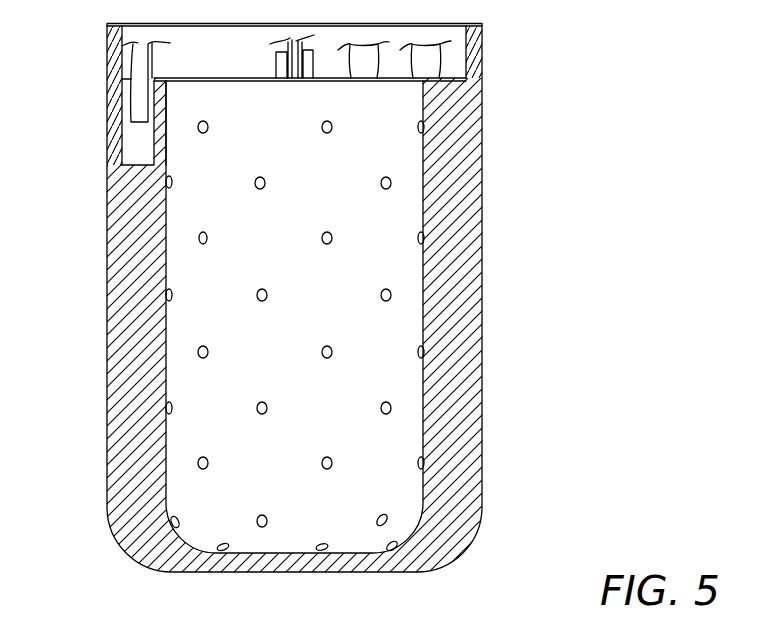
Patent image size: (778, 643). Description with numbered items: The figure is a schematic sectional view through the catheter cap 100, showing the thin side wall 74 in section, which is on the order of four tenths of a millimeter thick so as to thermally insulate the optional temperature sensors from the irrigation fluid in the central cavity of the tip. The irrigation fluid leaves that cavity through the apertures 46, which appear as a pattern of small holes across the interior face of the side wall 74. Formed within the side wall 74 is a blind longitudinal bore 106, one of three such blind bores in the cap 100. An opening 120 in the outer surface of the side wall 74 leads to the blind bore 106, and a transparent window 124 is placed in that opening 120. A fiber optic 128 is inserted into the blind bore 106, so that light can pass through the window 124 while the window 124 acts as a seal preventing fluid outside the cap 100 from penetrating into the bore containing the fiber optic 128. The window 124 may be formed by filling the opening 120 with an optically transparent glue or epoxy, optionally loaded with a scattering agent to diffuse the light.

The apertures 46 is at (327, 246).
The side wall 74 is at (467, 362).
The catheter cap 100 is at (482, 437).
The blind longitudinal bore 106 is at (120, 90).
The opening 120 is at (123, 177).
The transparent window 124 is at (107, 137).
The fiber optic 128 is at (138, 68).